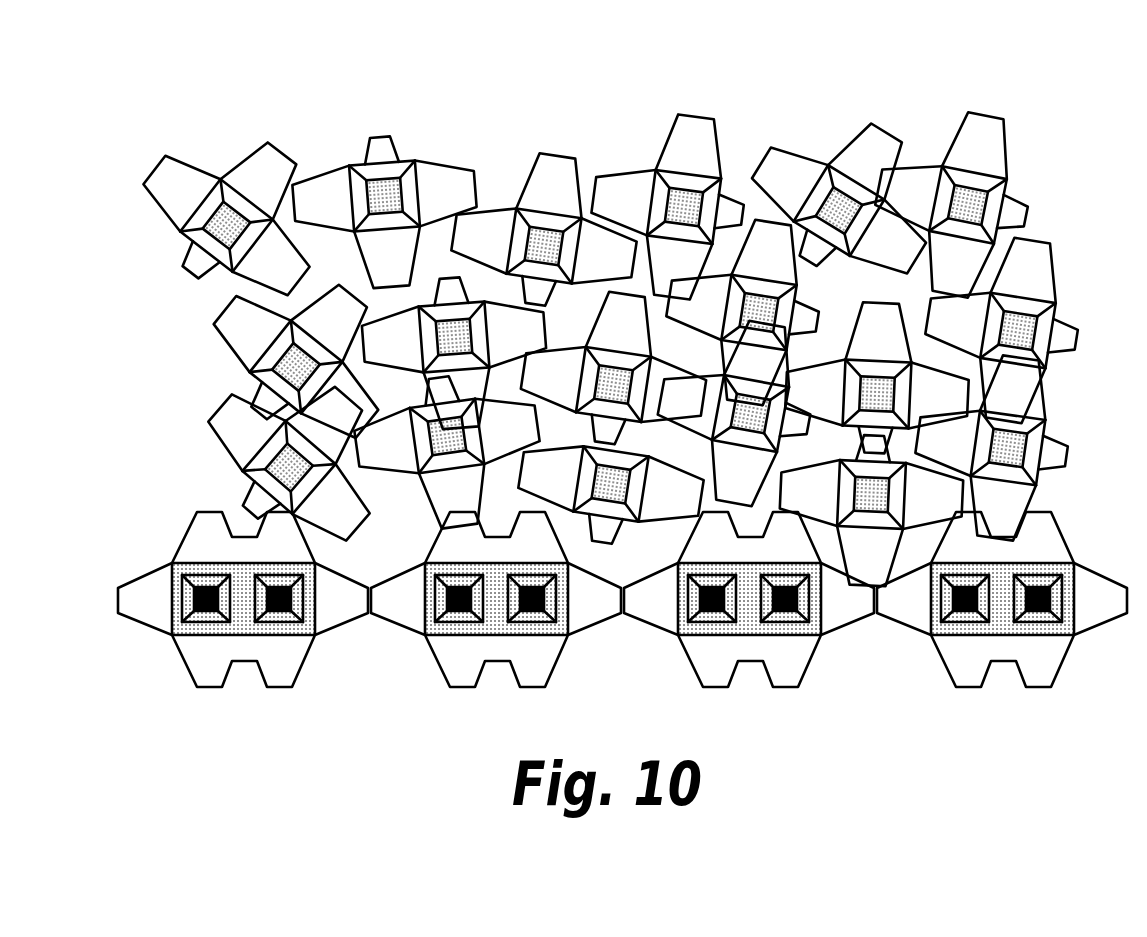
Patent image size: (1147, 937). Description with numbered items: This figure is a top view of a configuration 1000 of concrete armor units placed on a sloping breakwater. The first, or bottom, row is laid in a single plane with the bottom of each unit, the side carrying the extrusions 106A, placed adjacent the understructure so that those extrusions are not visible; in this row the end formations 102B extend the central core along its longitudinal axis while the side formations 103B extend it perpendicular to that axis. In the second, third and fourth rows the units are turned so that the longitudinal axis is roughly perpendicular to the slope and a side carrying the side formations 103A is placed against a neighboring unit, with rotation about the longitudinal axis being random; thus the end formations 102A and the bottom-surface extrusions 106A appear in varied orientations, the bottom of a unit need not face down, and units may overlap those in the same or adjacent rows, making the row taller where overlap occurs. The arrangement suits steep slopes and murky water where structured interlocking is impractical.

The configuration of armor units 1000 is at (372, 62).
The end formation 102A is at (200, 218).
The side formation 103A is at (185, 163).
The extrusion 106A is at (190, 272).
The end formation 102B is at (140, 615).
The side formation 103B is at (177, 583).